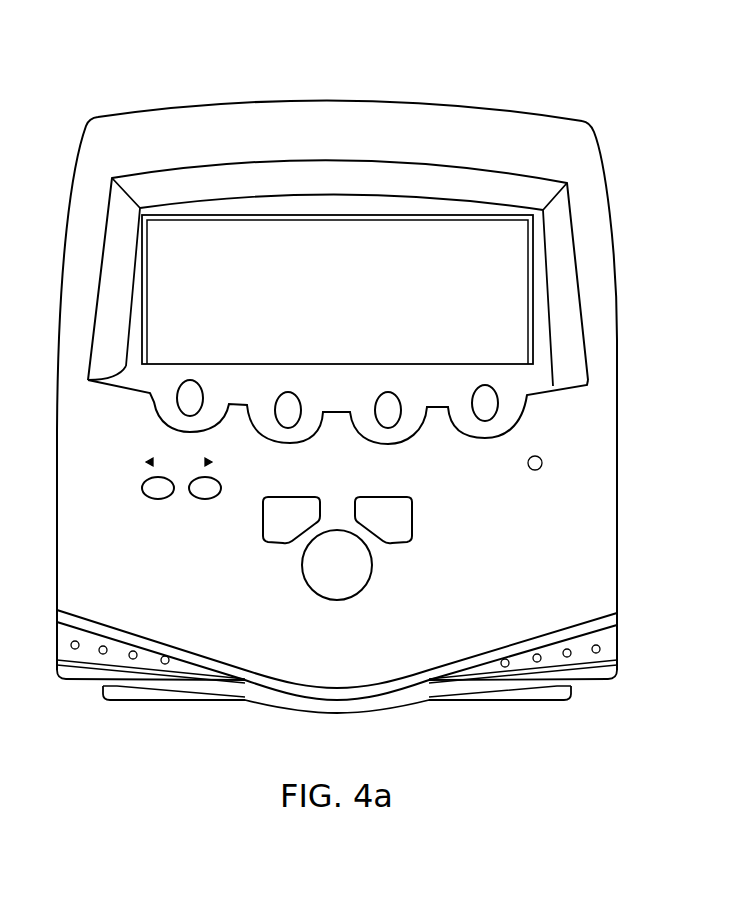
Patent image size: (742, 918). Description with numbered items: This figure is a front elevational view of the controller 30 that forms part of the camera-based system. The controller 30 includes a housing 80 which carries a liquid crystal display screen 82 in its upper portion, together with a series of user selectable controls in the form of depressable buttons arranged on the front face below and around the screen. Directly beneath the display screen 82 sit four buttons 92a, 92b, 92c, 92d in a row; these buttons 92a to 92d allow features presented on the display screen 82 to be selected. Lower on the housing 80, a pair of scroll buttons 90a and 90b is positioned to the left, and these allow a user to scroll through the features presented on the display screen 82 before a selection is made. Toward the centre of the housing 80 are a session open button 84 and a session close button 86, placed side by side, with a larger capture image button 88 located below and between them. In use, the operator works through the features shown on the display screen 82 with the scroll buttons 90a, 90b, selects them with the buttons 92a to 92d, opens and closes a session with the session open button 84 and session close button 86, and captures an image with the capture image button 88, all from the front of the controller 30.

The controller 30 is at (607, 118).
The housing 80 is at (625, 288).
The liquid crystal display screen 82 is at (353, 292).
The session open button 84 is at (295, 513).
The session close button 86 is at (382, 513).
The capture image button 88 is at (347, 570).
The scroll button 90a is at (158, 488).
The scroll button 90b is at (205, 488).
The button 92a is at (190, 398).
The button 92b is at (287, 411).
The button 92c is at (388, 411).
The button 92d is at (485, 403).